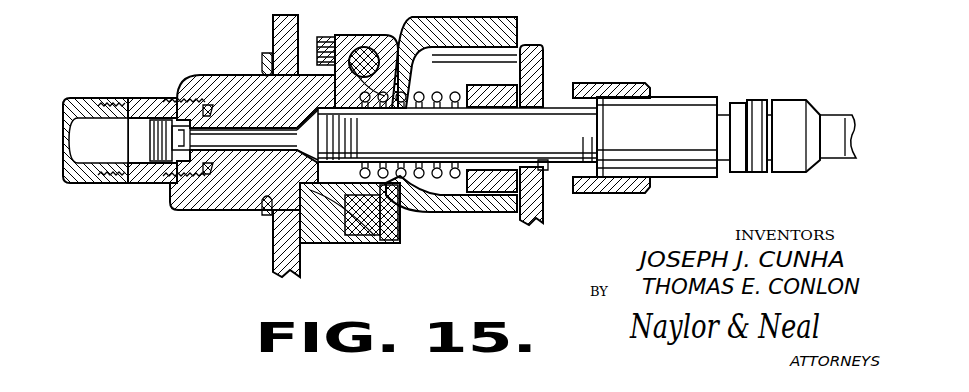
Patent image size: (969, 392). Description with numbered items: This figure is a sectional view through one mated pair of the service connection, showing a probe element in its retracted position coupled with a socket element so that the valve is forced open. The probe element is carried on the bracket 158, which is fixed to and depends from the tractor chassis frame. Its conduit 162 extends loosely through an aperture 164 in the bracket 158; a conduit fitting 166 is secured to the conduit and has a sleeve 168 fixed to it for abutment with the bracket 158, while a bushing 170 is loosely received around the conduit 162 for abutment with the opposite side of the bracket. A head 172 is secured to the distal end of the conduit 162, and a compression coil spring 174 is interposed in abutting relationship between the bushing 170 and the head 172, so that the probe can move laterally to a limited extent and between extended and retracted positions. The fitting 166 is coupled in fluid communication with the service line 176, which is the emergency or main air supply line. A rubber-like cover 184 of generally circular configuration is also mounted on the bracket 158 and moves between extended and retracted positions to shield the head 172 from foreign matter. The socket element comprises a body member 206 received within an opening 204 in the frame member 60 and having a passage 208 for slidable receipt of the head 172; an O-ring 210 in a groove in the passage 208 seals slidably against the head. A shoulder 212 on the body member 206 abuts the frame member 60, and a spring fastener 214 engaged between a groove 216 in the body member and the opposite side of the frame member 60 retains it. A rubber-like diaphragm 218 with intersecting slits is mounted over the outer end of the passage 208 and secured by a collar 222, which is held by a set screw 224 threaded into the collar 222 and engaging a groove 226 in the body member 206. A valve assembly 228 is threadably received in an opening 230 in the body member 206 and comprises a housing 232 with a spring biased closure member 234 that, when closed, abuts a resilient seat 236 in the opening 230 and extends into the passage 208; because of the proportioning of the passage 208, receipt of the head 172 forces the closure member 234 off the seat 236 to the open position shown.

The frame member 60 is at (274, 28).
The bracket 158 is at (545, 54).
The conduit 162 is at (557, 115).
The aperture 164 is at (545, 172).
The conduit fitting 166 is at (670, 103).
The sleeve 168 is at (615, 193).
The bushing 170 is at (488, 195).
The head 172 is at (249, 90).
The compression coil spring 174 is at (422, 100).
The service line 176 is at (836, 113).
The rubber-like cover 184 is at (520, 26).
The opening 204 is at (274, 252).
The body member 206 is at (168, 190).
The passage 208 is at (200, 213).
The O-ring 210 is at (306, 244).
The shoulder 212 is at (316, 36).
The spring fastener 214 is at (265, 56).
The groove 216 is at (264, 214).
The diaphragm 218 is at (373, 244).
The collar 222 is at (372, 42).
The set screw 224 is at (350, 47).
The groove 226 is at (337, 246).
The valve assembly 228 is at (140, 92).
The opening 230 is at (172, 98).
The housing 232 is at (124, 185).
The closure member 234 is at (162, 145).
The resilient seat 236 is at (207, 104).